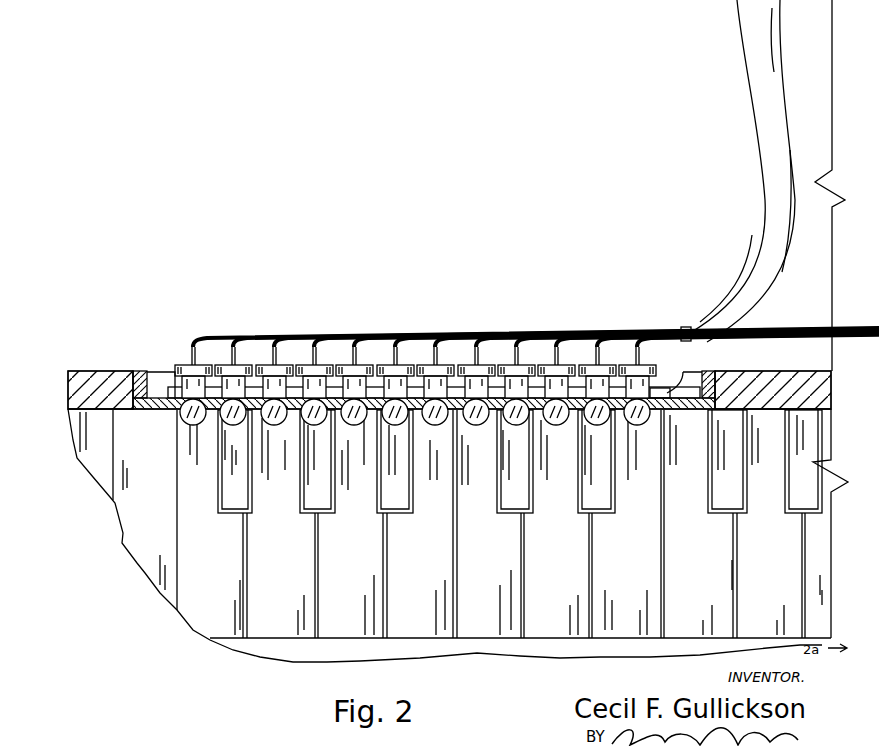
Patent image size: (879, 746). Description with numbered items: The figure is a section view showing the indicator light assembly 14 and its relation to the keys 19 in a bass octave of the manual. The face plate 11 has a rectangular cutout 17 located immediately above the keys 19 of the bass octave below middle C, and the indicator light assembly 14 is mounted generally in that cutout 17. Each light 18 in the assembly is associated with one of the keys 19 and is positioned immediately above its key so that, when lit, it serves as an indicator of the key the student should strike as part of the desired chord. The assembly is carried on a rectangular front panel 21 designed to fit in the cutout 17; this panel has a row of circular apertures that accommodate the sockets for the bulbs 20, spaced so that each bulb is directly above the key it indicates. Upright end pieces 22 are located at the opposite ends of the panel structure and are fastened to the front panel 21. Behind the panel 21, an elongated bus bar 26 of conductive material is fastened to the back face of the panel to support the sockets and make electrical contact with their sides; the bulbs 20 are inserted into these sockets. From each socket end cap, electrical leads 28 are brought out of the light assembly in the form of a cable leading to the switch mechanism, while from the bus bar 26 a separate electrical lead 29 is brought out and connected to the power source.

The face plate 11 is at (96, 362).
The rectangular cutout 17 is at (130, 371).
The upright end pieces 22 is at (138, 371).
The front panel 21 is at (157, 409).
The electrical lead 29 is at (678, 385).
The bulbs 20 is at (322, 421).
The indicator light assembly 14 is at (212, 420).
The light 18 is at (181, 365).
The bus bar 26 is at (414, 376).
The electrical leads 28 is at (314, 357).
The keys 19 is at (137, 562).